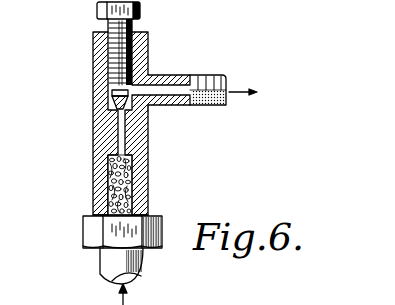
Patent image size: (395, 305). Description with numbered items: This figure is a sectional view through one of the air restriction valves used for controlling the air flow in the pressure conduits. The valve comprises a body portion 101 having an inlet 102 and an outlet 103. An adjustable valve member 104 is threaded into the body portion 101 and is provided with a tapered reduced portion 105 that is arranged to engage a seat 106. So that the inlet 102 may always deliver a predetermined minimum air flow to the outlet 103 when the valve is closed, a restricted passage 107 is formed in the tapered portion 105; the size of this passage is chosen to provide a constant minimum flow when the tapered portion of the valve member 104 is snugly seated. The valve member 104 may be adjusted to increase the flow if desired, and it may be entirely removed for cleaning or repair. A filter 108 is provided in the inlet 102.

The body portion 101 is at (148, 141).
The inlet 102 is at (93, 152).
The outlet 103 is at (176, 90).
The adjustable valve member 104 is at (131, 27).
The tapered reduced portion 105 is at (115, 101).
The seat 106 is at (95, 119).
The restricted passage 107 is at (149, 108).
The filter 108 is at (149, 176).